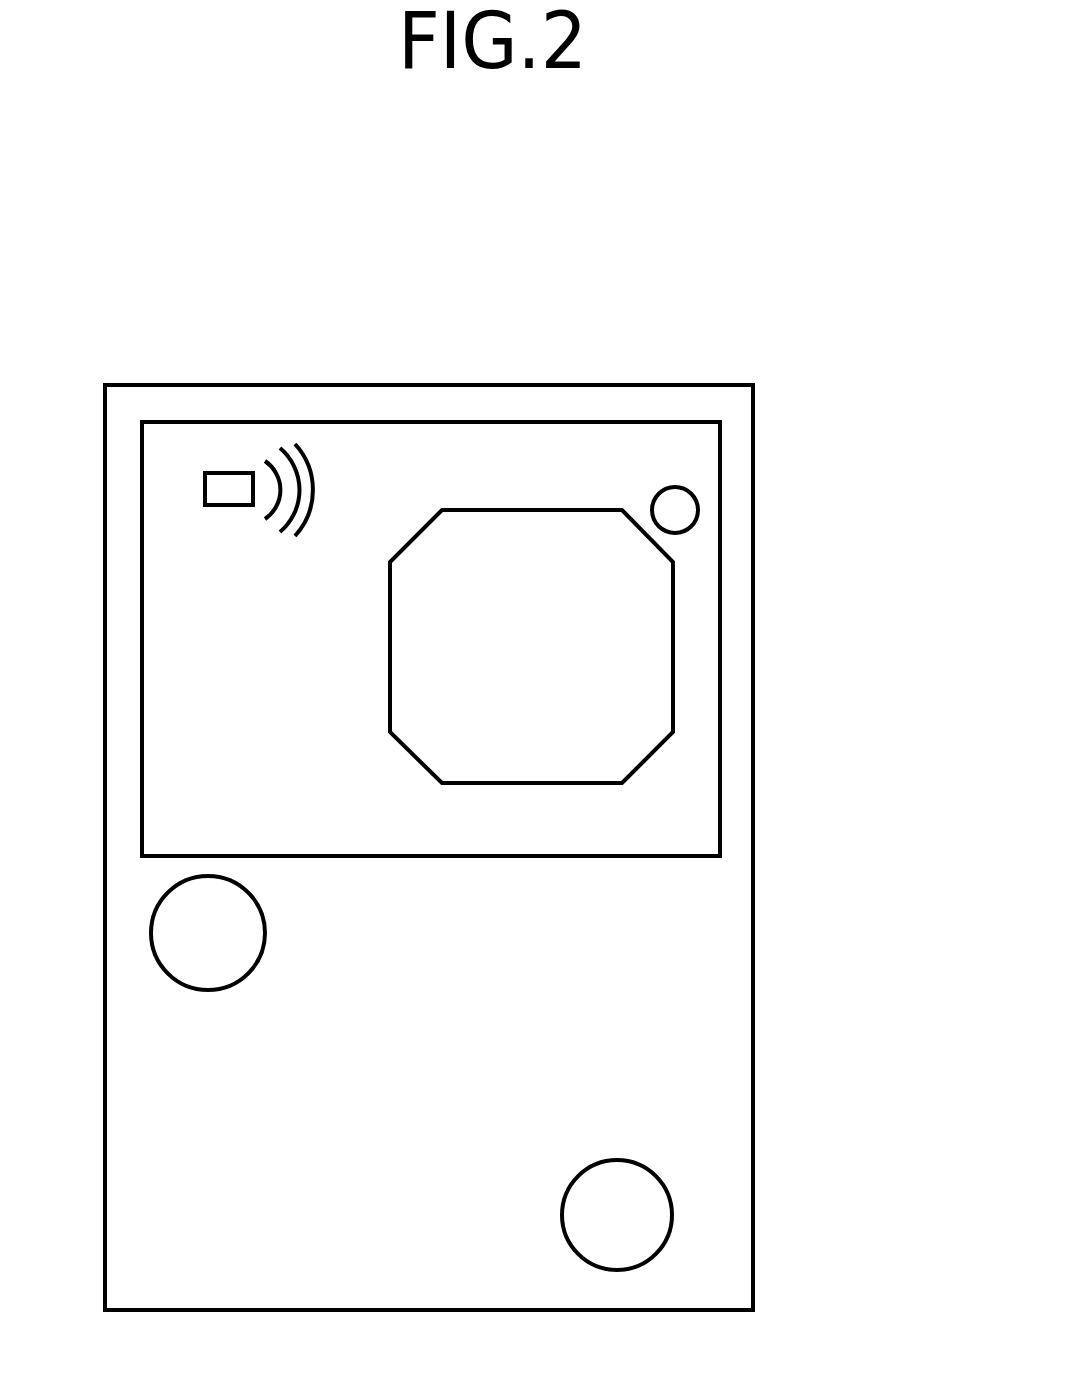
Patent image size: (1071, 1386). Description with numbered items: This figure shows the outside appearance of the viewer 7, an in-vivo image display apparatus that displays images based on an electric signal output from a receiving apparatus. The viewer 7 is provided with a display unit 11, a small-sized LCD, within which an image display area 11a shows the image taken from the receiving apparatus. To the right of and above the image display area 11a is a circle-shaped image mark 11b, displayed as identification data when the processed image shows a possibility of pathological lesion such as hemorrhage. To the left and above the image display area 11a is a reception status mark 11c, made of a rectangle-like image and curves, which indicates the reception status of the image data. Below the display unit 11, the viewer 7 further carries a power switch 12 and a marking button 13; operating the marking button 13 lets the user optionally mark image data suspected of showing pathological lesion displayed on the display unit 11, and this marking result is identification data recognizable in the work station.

The viewer 7 is at (850, 295).
The display unit 11 is at (700, 827).
The image display area 11a is at (650, 645).
The image mark 11b is at (698, 510).
The reception status mark 11c is at (228, 478).
The power switch 12 is at (655, 1217).
The marking button 13 is at (178, 936).